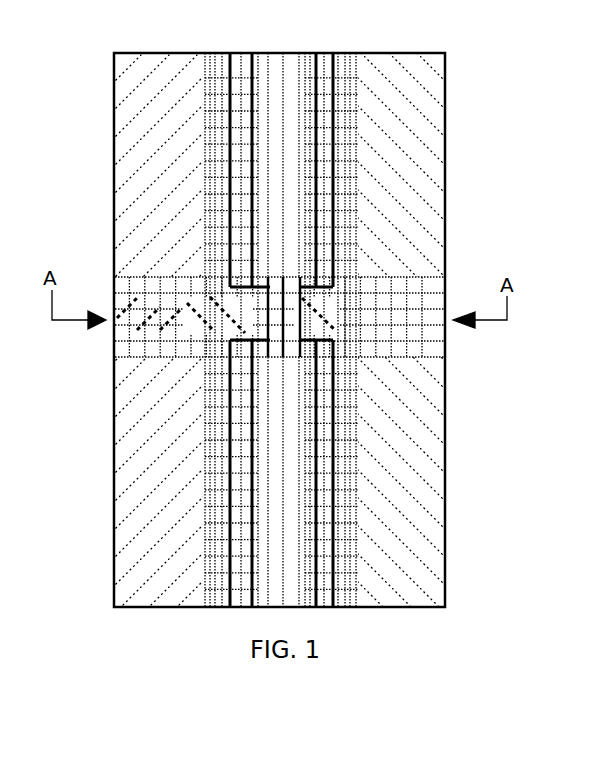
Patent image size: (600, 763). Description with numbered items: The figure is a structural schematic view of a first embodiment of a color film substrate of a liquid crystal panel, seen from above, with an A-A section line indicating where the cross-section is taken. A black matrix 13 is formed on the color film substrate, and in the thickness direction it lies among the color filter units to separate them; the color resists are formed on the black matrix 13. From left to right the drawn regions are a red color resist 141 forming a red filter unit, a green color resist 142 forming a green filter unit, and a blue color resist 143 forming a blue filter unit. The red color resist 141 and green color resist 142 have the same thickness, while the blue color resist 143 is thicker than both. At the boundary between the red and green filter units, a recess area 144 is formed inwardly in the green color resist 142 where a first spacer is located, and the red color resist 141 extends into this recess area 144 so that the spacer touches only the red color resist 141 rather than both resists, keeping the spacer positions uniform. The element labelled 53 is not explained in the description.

The black matrix 13 is at (212, 53).
The red color resist 141 is at (115, 122).
The green color resist 142 is at (280, 53).
The blue color resist 143 is at (445, 122).
The recess area 144 is at (253, 300).
The bridge structure 53 is at (445, 335).